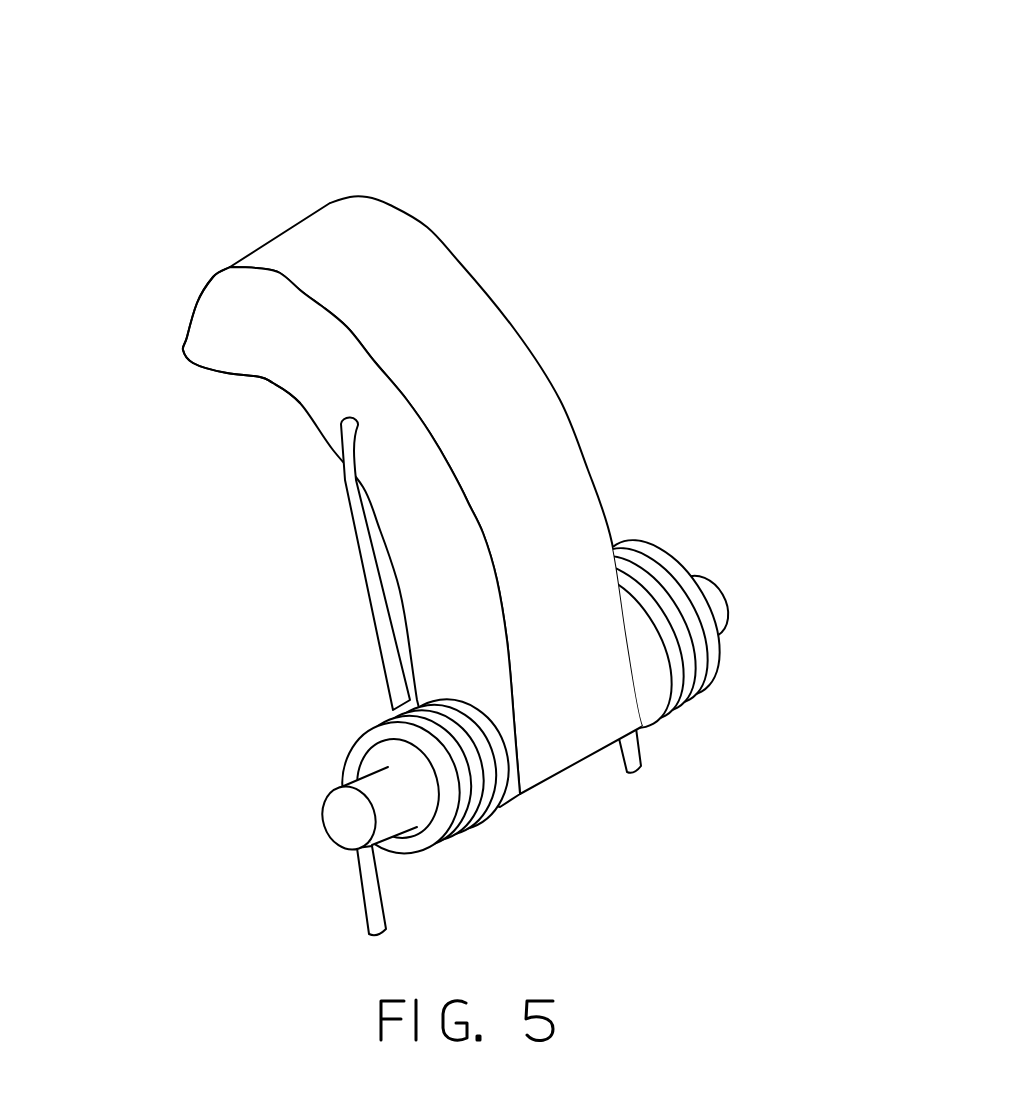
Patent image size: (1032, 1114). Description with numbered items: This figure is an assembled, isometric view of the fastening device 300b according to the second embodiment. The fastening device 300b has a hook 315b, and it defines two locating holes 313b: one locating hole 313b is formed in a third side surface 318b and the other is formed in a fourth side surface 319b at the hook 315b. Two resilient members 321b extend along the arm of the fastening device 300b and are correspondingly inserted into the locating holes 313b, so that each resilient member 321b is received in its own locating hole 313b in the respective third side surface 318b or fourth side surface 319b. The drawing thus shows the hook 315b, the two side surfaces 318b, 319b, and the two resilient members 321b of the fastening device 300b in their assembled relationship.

The fastening device 300b is at (458, 53).
The locating hole 313b is at (346, 417).
The hook 315b is at (297, 225).
The third side surface 318b is at (220, 315).
The fourth side surface 319b is at (347, 464).
The resilient member 321b is at (705, 668).